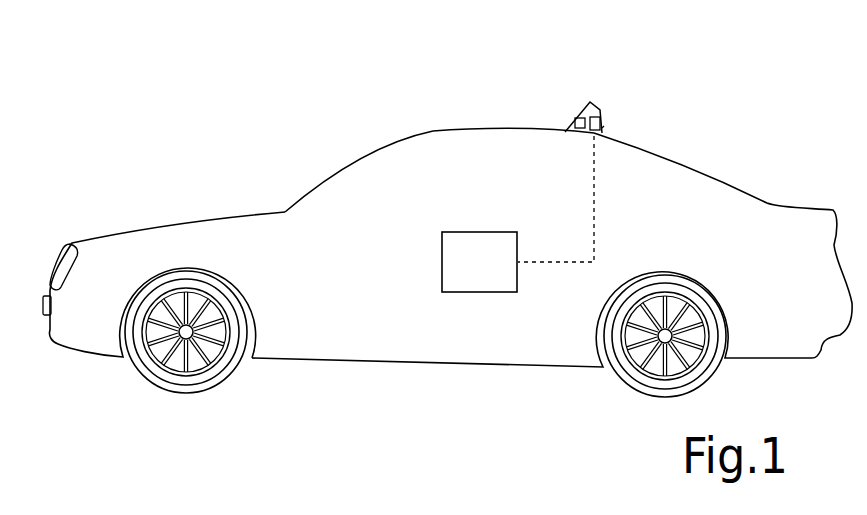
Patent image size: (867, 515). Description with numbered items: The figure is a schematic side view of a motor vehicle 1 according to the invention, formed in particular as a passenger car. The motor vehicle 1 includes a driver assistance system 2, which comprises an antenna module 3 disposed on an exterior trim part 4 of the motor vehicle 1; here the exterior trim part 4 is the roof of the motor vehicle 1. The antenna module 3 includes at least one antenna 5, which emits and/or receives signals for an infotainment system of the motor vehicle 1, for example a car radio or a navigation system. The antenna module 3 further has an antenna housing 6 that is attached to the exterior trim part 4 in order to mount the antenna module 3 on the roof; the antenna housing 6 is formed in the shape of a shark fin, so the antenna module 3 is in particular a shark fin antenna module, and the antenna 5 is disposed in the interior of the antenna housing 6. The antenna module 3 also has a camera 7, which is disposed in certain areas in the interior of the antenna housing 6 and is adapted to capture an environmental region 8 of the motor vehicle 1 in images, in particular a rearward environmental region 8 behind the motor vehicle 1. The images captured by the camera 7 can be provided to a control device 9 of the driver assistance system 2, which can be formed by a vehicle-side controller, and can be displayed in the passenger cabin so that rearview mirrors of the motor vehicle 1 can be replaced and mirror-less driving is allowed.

The motor vehicle 1 is at (180, 218).
The driver assistance system 2 is at (387, 238).
The antenna module 3 is at (583, 73).
The exterior trim part 4 is at (433, 132).
The antenna 5 is at (575, 126).
The antenna housing 6 is at (590, 102).
The camera 7 is at (602, 127).
The environmental region 8 is at (735, 83).
The control device 9 is at (485, 232).